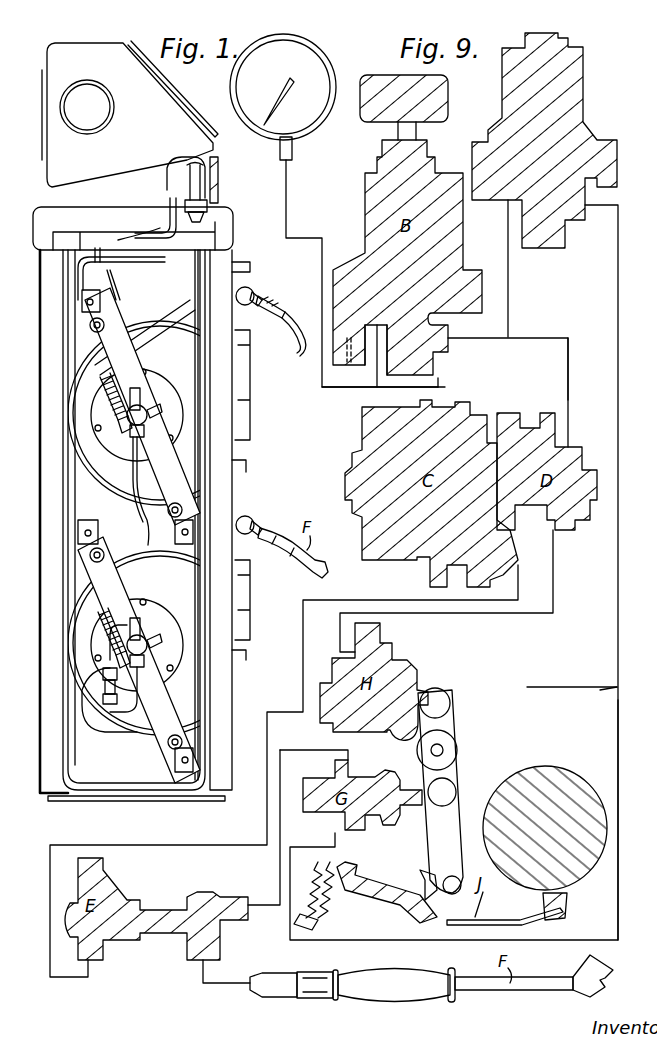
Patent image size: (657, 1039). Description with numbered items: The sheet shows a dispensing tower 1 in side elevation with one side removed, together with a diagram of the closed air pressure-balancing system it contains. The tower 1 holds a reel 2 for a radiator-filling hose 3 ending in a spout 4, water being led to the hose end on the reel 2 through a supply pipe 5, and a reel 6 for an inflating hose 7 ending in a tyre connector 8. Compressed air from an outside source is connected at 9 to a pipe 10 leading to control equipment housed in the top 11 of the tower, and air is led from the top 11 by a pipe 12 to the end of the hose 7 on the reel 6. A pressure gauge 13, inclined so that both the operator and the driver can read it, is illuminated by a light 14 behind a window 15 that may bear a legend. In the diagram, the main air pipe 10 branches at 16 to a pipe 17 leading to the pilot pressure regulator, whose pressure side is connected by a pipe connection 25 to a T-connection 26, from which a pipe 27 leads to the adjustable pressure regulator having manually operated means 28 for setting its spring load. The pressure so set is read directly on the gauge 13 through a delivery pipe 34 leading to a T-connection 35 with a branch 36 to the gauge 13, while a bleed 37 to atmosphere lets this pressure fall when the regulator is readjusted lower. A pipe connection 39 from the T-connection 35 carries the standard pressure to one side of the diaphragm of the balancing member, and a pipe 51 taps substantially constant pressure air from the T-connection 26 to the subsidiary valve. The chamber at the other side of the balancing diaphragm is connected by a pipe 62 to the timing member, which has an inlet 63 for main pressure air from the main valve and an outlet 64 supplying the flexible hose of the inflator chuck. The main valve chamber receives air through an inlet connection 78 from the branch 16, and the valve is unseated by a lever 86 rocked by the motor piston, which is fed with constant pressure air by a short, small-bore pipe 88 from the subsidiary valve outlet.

In FIG. 1, the dispensing tower 1 is at (52, 288).
In FIG. 1, the reel 2 is at (133, 333).
In FIG. 1, the radiator-filling hose 3 is at (162, 312).
In FIG. 1, the spout 4 is at (290, 313).
In FIG. 1, the supply pipe 5 is at (132, 478).
In FIG. 1, the reel 6 is at (107, 723).
In FIG. 1, the inflating hose 7 is at (155, 548).
In FIG. 1, the tyre connector 8 is at (325, 570).
In FIG. 1, the connection 9 is at (107, 693).
In FIG. 1, the pipe 10 is at (87, 278).
In FIG. 9, the pipe 10 is at (567, 687).
In FIG. 1, the top 11 is at (100, 70).
In FIG. 1, the pipe 12 is at (100, 268).
In FIG. 1, the pressure gauge 13 is at (193, 113).
In FIG. 9, the pressure gauge 13 is at (324, 54).
In FIG. 1, the light 14 is at (205, 172).
In FIG. 1, the window 15 is at (218, 195).
In FIG. 9, the branch 16 is at (608, 697).
In FIG. 9, the pipe 17 is at (617, 268).
In FIG. 9, the pipe connection 25 is at (510, 297).
In FIG. 9, the T-connection 26 is at (508, 340).
In FIG. 9, the pipe 27 is at (475, 342).
In FIG. 9, the manually operated means 28 is at (420, 83).
In FIG. 9, the delivery pipe 34 is at (322, 378).
In FIG. 9, the T-connection 35 is at (365, 395).
In FIG. 9, the branch 36 is at (295, 238).
In FIG. 9, the bleed 37 is at (320, 367).
In FIG. 9, the pipe connection 39 is at (443, 392).
In FIG. 9, the pipe 51 is at (568, 355).
In FIG. 9, the pipe 62 is at (518, 600).
In FIG. 9, the inlet 63 is at (277, 908).
In FIG. 1, the outlet 64 is at (110, 232).
In FIG. 9, the outlet 64 is at (203, 977).
In FIG. 9, the inlet connection 78 is at (613, 728).
In FIG. 9, the lever 86 is at (442, 720).
In FIG. 9, the pipe 88 is at (553, 607).